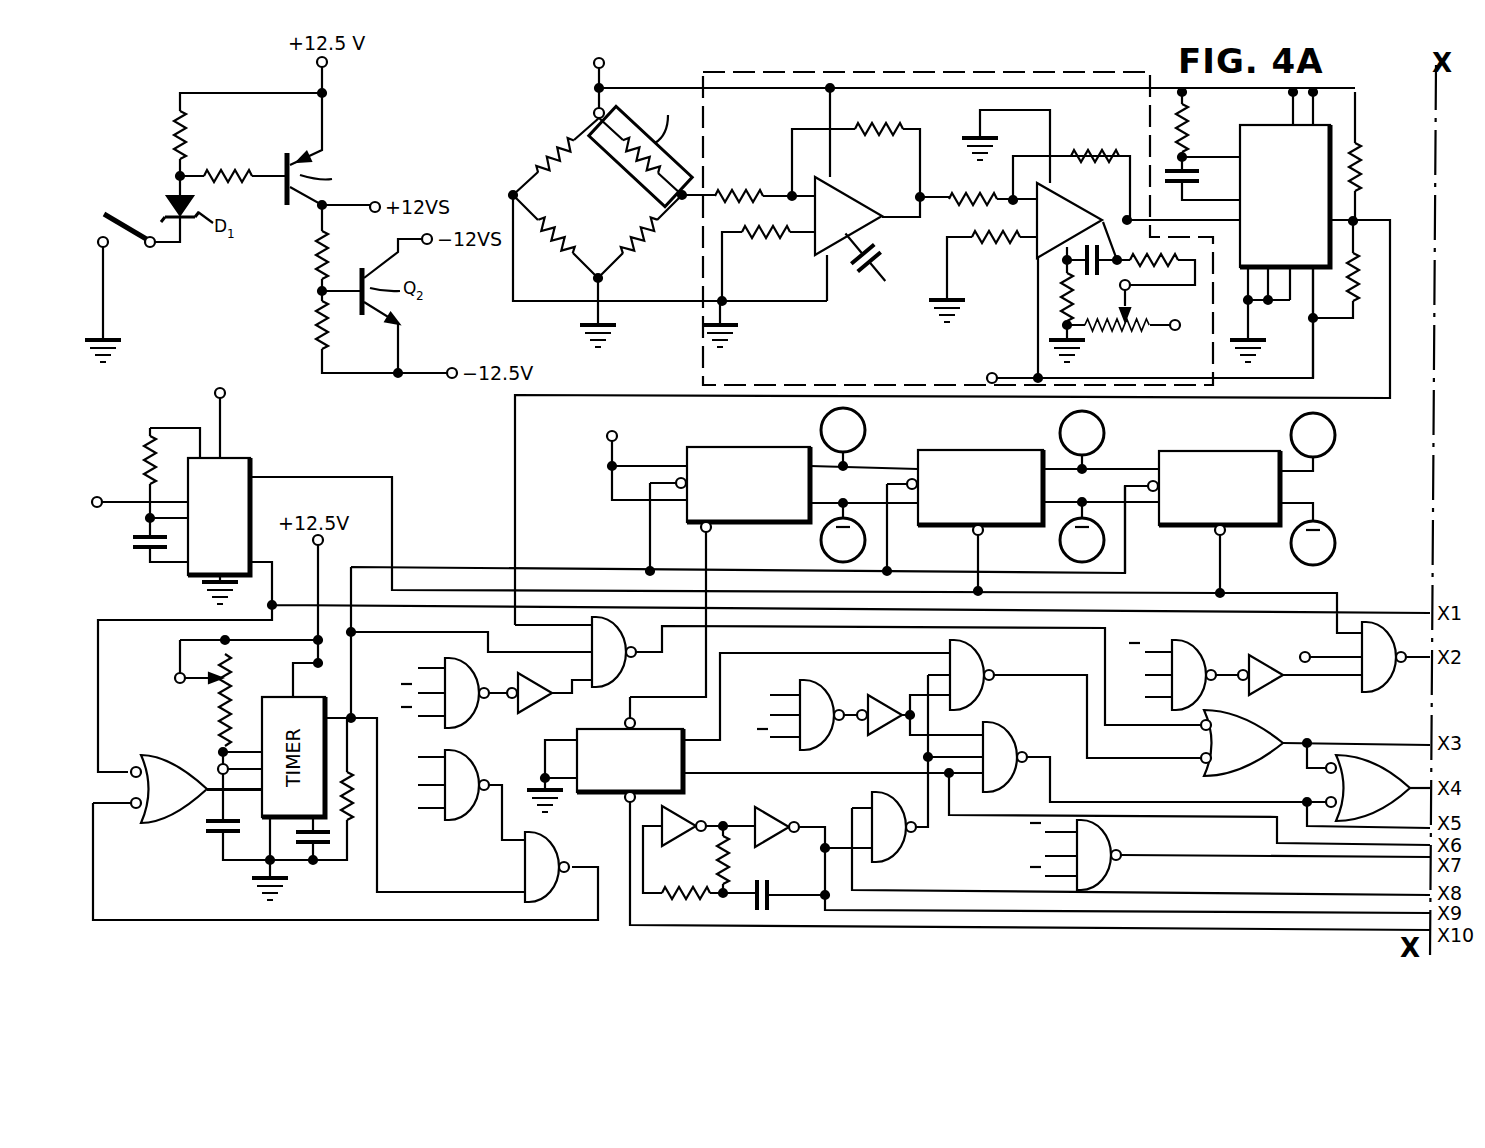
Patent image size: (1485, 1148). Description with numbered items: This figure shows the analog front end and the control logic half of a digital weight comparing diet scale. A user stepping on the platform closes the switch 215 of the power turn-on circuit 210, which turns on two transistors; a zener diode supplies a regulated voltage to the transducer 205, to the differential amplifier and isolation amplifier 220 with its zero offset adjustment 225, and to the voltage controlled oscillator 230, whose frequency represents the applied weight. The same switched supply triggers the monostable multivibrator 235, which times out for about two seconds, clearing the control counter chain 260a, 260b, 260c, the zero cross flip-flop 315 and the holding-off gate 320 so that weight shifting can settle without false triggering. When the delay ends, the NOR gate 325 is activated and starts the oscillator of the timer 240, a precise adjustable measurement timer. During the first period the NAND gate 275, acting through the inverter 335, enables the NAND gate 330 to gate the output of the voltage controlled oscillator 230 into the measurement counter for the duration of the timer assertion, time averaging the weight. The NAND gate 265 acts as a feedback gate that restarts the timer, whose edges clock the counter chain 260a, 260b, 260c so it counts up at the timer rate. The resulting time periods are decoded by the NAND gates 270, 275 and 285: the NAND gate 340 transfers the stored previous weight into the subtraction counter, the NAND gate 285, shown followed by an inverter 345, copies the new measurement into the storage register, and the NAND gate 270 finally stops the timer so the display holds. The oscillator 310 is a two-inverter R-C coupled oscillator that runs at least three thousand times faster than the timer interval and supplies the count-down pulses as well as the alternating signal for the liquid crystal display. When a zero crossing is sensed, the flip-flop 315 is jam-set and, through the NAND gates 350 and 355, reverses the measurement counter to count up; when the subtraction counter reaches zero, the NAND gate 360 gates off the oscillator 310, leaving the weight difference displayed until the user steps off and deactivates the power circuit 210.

The transducer 205 is at (932, 189).
The power turn-on circuit 210 is at (322, 166).
The switch 215 is at (136, 225).
The differential amplifier and isolation amplifier 220 is at (983, 68).
The zero offset adjustment 225 is at (1103, 295).
The voltage controlled oscillator 230 is at (1263, 140).
The monostable multivibrator 235 is at (232, 462).
The timer 240 is at (279, 700).
The control counter 260a is at (716, 453).
The control counter 260b is at (1000, 452).
The control counter 260c is at (1233, 453).
The NAND gate 265 is at (533, 860).
The NAND gate 270 is at (468, 774).
The NAND gate 275 is at (462, 719).
The NAND gate 285 is at (818, 733).
The oscillator 310 is at (710, 868).
The zero cross flip-flop 315 is at (587, 793).
The holding-off gate 320 is at (1373, 688).
The NOR gate 325 is at (179, 768).
The NAND gate 330 is at (628, 663).
The inverter 335 is at (538, 702).
The NAND gate 340 is at (1094, 846).
The inverter 345 is at (880, 697).
The NAND gate 350 is at (977, 660).
The NAND gate 355 is at (1000, 736).
The NAND gate 360 is at (893, 851).